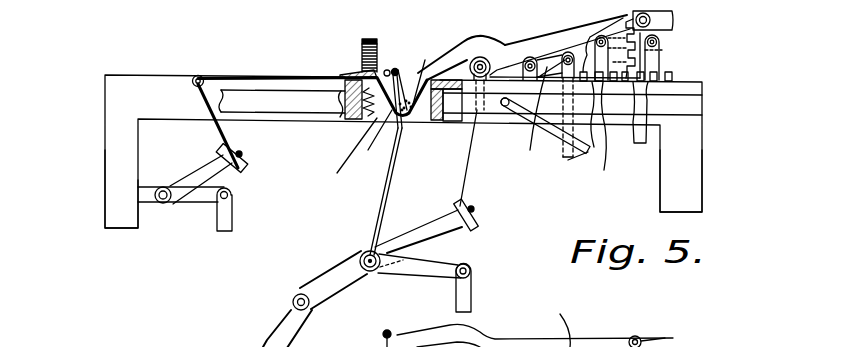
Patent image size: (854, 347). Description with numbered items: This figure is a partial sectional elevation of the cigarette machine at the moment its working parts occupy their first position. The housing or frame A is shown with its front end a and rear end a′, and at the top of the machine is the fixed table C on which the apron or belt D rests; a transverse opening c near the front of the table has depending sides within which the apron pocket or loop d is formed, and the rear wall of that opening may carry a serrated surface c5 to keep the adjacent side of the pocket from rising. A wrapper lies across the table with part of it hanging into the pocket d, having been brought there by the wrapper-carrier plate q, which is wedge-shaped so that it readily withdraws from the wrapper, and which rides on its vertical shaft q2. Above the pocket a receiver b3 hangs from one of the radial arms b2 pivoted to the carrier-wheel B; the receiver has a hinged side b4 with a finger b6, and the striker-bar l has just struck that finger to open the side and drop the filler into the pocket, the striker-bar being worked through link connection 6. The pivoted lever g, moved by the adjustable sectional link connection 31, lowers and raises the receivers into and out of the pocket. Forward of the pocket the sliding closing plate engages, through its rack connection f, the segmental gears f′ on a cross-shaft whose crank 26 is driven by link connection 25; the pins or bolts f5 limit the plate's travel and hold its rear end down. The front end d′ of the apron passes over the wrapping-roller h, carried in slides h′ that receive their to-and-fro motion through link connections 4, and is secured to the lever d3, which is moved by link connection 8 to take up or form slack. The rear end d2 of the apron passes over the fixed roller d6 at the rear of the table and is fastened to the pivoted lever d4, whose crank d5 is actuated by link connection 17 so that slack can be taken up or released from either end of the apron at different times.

The housing or frame A is at (413, 151).
The rear end of the frame a′ is at (102, 189).
The front end of the frame a is at (689, 181).
The carrier-wheel B is at (673, 28).
The fixed table C is at (343, 112).
The transverse opening c is at (430, 118).
The serrated surface c5 is at (337, 173).
The apron or belt D is at (238, 78).
The apron pocket or loop d is at (402, 104).
The front end of the apron d′ is at (467, 166).
The rear end of the apron d2 is at (214, 129).
The lever d3 is at (340, 267).
The pivoted lever d4 is at (242, 178).
The crank d5 is at (200, 198).
The fixed roller d6 is at (195, 77).
The rack connection f is at (673, 73).
The segmental gears f′ is at (640, 78).
The pins or bolts f5 is at (387, 69).
The pivoted lever g is at (545, 122).
The wrapping-roller h is at (470, 58).
The slides h′ is at (488, 112).
The striker-bar l is at (390, 198).
The wrapper-carrier plate q is at (340, 70).
The vertical shaft q2 is at (361, 42).
The radial arms b2 is at (535, 46).
The receiver b3 is at (410, 76).
The hinged side b4 is at (383, 346).
The finger b6 is at (372, 138).
The link connections 4 is at (594, 172).
The link connection 6 is at (472, 298).
The link connection 8 is at (276, 322).
The link connection 17 is at (232, 225).
The link connection 25 is at (642, 144).
The crank 26 is at (662, 56).
The adjustable sectional link connection 31 is at (568, 160).
The bracket F′ is at (620, 205).